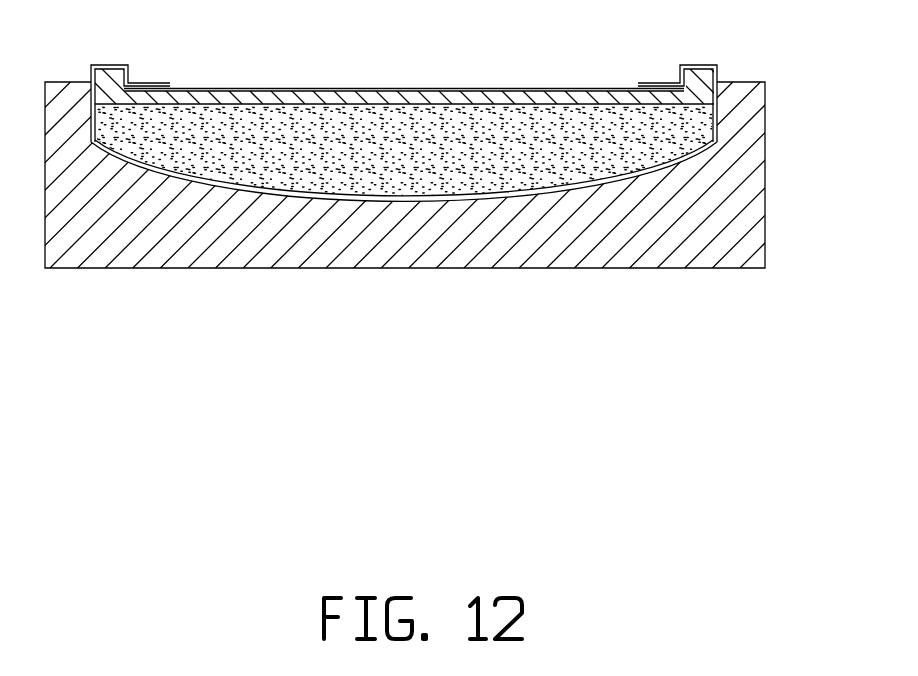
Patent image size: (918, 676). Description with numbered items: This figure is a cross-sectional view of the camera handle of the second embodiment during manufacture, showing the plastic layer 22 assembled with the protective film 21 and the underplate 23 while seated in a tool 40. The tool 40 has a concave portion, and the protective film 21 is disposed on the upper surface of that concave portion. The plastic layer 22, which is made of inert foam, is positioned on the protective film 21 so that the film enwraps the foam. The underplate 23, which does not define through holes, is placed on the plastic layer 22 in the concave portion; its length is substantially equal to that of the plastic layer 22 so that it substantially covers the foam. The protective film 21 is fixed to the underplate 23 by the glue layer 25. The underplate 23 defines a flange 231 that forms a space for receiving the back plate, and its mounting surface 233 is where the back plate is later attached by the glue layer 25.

The protective film 21 is at (490, 195).
The plastic layer 22 is at (590, 50).
The underplate 23 is at (228, 74).
The mounting surface 233 is at (382, 58).
The glue layer 25 is at (110, 65).
The flange 231 is at (735, 46).
The tool 40 is at (830, 153).